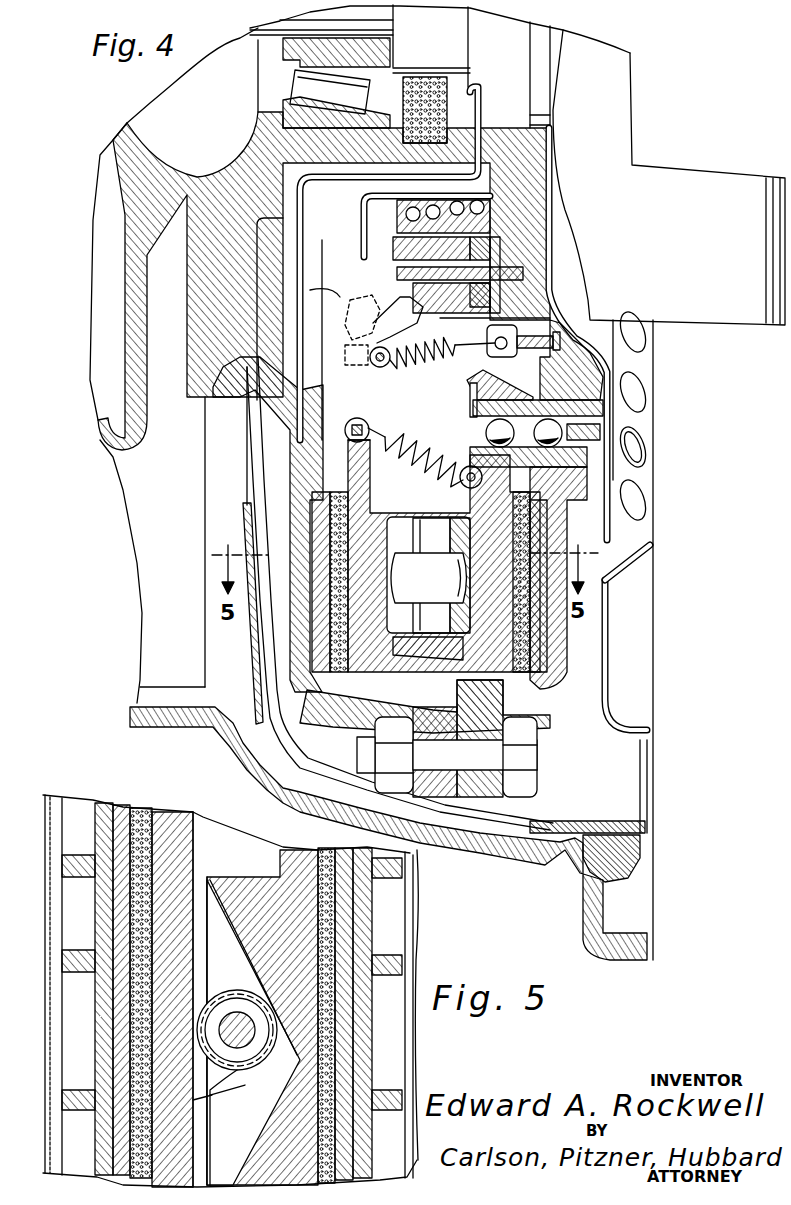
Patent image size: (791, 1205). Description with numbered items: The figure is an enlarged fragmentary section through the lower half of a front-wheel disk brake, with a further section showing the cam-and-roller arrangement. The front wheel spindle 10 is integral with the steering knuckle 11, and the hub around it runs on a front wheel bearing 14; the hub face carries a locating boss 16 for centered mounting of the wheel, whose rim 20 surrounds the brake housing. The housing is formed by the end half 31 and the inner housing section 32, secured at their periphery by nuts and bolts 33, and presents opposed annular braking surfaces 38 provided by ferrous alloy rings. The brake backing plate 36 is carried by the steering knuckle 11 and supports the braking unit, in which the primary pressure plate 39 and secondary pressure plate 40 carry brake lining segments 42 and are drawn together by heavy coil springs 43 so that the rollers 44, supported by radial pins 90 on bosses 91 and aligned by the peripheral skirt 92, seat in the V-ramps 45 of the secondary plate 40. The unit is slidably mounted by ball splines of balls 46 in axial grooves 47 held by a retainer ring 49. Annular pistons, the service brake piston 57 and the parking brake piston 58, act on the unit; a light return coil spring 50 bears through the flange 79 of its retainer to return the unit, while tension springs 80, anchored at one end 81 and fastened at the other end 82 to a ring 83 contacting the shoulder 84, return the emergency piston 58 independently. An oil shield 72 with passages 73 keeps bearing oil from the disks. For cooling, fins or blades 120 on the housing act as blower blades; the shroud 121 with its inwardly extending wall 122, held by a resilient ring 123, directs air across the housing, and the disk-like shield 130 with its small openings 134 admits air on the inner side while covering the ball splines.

In FIG. 4, the front wheel spindle 10 is at (262, 38).
In FIG. 4, the steering knuckle 11 is at (733, 182).
In FIG. 4, the front wheel bearing 14 is at (308, 88).
In FIG. 4, the locating boss 16 is at (222, 375).
In FIG. 4, the rim 20 is at (500, 870).
In FIG. 4, the end half of brake housing 31 is at (308, 718).
In FIG. 4, the inner housing section 32 is at (530, 714).
In FIG. 4, the nuts and bolts 33 is at (488, 775).
In FIG. 4, the brake backing plate 36 is at (545, 290).
In FIG. 4, the braking surfaces 38 is at (315, 686).
In FIG. 5, the braking surfaces 38 is at (165, 813).
In FIG. 4, the primary pressure plate 39 is at (362, 655).
In FIG. 5, the primary pressure plate 39 is at (185, 833).
In FIG. 4, the secondary pressure plate 40 is at (493, 655).
In FIG. 5, the secondary pressure plate 40 is at (292, 850).
In FIG. 4, the brake lining segments 42 is at (352, 508).
In FIG. 5, the brake lining segments 42 is at (140, 908).
In FIG. 4, the coil springs 43 is at (428, 484).
In FIG. 4, the rollers 44 is at (458, 580).
In FIG. 5, the rollers 44 is at (256, 1065).
In FIG. 4, the V-ramps 45 is at (470, 545).
In FIG. 5, the V-ramps 45 is at (246, 1090).
In FIG. 4, the balls 46 is at (487, 428).
In FIG. 4, the axial grooves 47 is at (474, 410).
In FIG. 4, the retainer ring 49 is at (600, 433).
In FIG. 4, the return coil spring 50 is at (410, 215).
In FIG. 4, the service brake piston 57 is at (403, 258).
In FIG. 4, the parking brake piston 58 is at (392, 286).
In FIG. 4, the oil shield 72 is at (340, 297).
In FIG. 4, the passages 73 is at (268, 397).
In FIG. 4, the flange of spring retainer 79 is at (362, 251).
In FIG. 4, the tension springs 80 is at (424, 368).
In FIG. 4, the anchored end of tension spring 81 is at (503, 338).
In FIG. 4, the fastened end of tension spring 82 is at (378, 368).
In FIG. 4, the ring 83 is at (388, 310).
In FIG. 4, the shoulder 84 is at (473, 277).
In FIG. 4, the pins 90 is at (425, 540).
In FIG. 5, the pins 90 is at (263, 1015).
In FIG. 4, the bosses 91 is at (405, 518).
In FIG. 5, the bosses 91 is at (200, 995).
In FIG. 4, the peripheral wall or skirt 92 is at (425, 652).
In FIG. 5, the peripheral wall or skirt 92 is at (213, 938).
In FIG. 4, the fins or blades 120 is at (630, 790).
In FIG. 5, the fins or blades 120 is at (405, 945).
In FIG. 4, the annular shield or shroud 121 is at (636, 820).
In FIG. 4, the inwardly extending wall 122 is at (243, 512).
In FIG. 4, the resilient ring 123 is at (630, 862).
In FIG. 4, the disk-like shield 130 is at (633, 572).
In FIG. 4, the small openings 134 is at (642, 453).